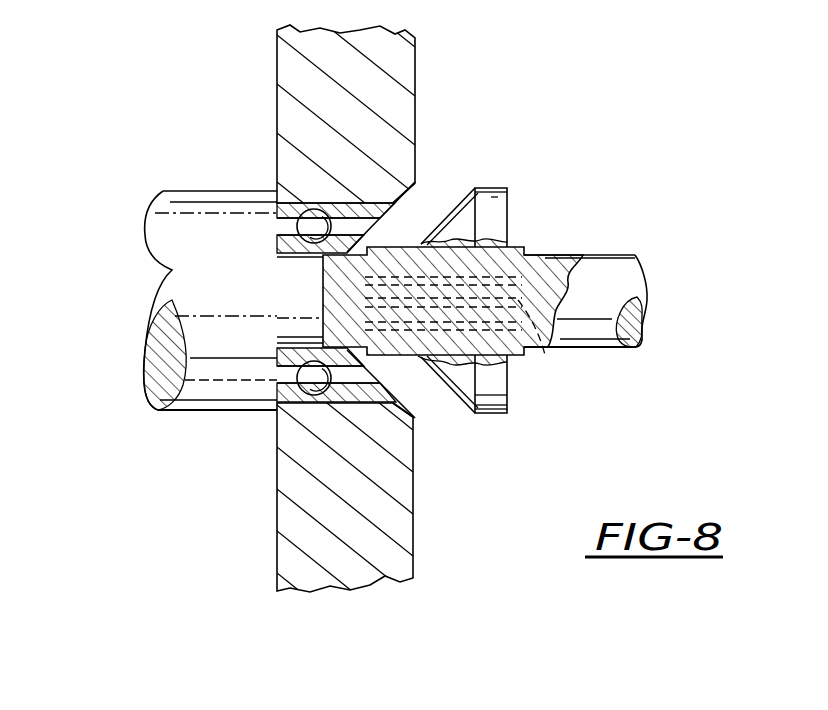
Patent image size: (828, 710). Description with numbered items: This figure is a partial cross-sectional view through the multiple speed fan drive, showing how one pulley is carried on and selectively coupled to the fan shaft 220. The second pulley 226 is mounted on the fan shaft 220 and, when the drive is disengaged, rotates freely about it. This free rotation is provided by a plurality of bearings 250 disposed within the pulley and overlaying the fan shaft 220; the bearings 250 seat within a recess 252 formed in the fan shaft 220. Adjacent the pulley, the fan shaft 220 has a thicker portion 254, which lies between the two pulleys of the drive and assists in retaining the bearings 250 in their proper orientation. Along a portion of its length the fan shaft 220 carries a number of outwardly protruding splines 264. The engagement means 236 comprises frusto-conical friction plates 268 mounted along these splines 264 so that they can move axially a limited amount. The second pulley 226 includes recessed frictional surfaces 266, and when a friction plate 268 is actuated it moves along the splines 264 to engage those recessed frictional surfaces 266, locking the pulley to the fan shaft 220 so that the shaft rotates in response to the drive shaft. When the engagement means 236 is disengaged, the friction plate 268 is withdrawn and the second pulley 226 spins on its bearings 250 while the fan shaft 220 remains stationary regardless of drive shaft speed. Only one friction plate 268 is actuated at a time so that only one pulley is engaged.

The fan shaft 220 is at (627, 263).
The second pulley 226 is at (403, 90).
The engagement means 236 is at (472, 172).
The bearings 250 is at (298, 226).
The recess 252 is at (283, 205).
The thicker portion 254 is at (180, 268).
The splines 264 is at (525, 249).
The recessed frictional surfaces 266 is at (410, 202).
The frusto-conical friction plates 268 is at (507, 208).